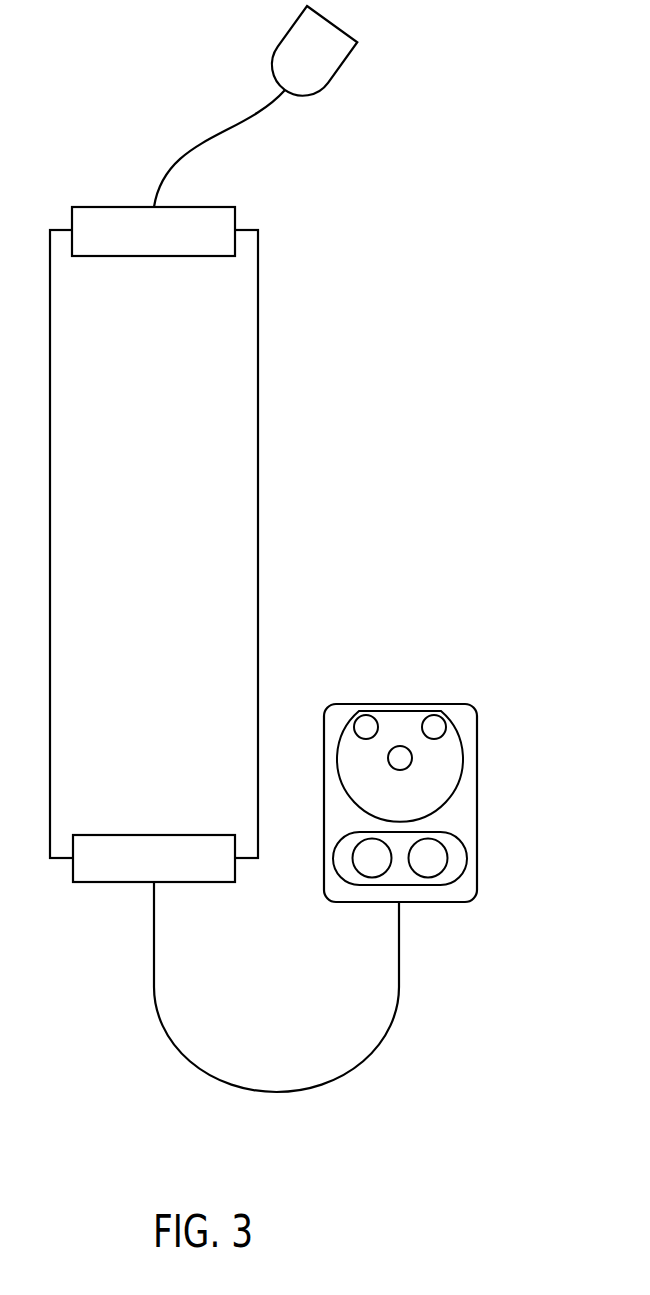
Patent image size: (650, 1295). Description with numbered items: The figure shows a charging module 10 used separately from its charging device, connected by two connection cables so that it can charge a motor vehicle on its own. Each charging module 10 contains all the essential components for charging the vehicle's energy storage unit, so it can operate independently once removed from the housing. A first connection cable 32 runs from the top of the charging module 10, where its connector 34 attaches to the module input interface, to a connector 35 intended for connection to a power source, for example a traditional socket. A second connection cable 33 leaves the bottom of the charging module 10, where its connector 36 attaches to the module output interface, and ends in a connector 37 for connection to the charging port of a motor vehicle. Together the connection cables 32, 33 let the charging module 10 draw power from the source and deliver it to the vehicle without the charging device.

The charging module 10 is at (260, 458).
The first connection cable 32 is at (168, 74).
The second connection cable 33 is at (390, 1055).
The connector 34 is at (107, 207).
The connector 35 is at (343, 68).
The connector 36 is at (98, 883).
The connector 37 is at (478, 802).